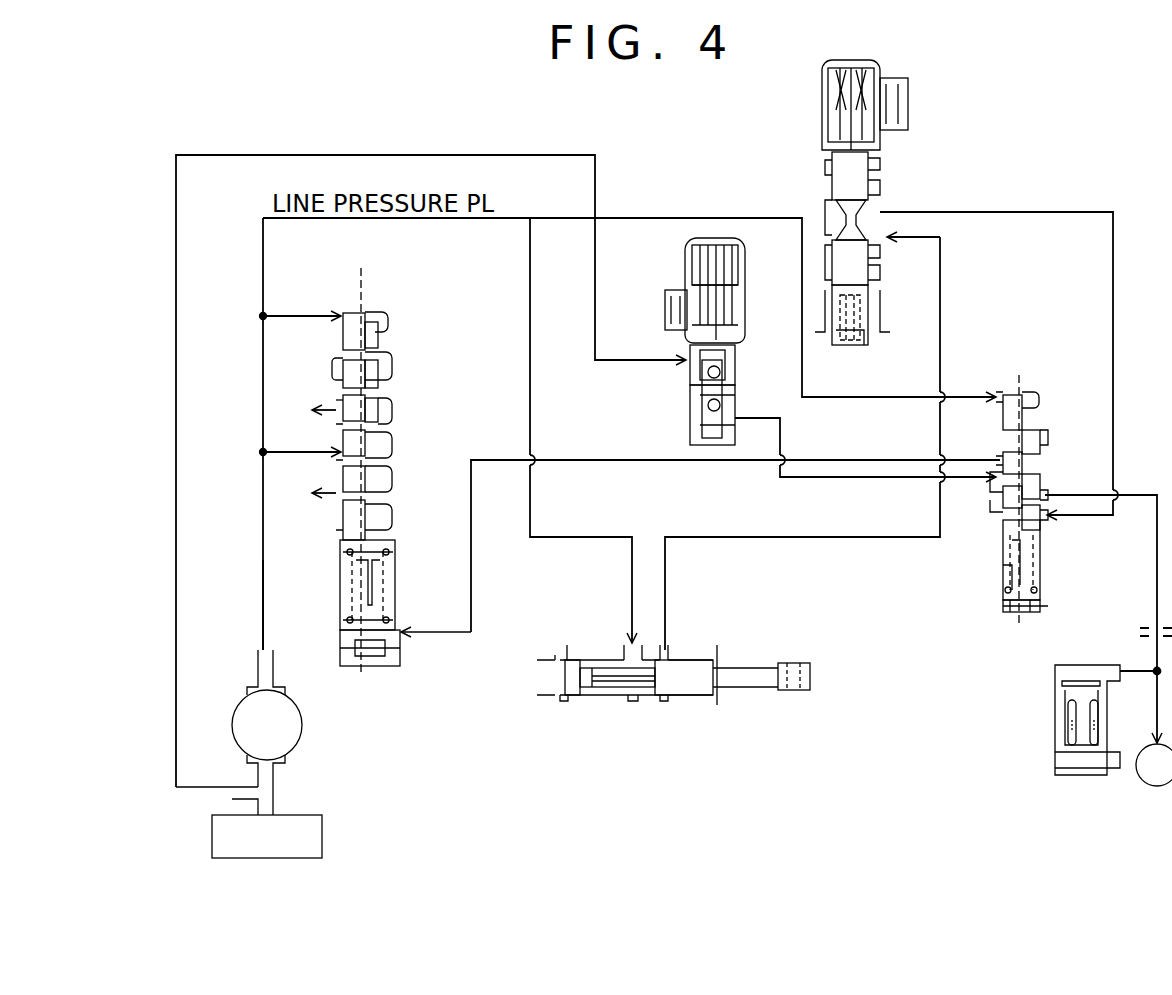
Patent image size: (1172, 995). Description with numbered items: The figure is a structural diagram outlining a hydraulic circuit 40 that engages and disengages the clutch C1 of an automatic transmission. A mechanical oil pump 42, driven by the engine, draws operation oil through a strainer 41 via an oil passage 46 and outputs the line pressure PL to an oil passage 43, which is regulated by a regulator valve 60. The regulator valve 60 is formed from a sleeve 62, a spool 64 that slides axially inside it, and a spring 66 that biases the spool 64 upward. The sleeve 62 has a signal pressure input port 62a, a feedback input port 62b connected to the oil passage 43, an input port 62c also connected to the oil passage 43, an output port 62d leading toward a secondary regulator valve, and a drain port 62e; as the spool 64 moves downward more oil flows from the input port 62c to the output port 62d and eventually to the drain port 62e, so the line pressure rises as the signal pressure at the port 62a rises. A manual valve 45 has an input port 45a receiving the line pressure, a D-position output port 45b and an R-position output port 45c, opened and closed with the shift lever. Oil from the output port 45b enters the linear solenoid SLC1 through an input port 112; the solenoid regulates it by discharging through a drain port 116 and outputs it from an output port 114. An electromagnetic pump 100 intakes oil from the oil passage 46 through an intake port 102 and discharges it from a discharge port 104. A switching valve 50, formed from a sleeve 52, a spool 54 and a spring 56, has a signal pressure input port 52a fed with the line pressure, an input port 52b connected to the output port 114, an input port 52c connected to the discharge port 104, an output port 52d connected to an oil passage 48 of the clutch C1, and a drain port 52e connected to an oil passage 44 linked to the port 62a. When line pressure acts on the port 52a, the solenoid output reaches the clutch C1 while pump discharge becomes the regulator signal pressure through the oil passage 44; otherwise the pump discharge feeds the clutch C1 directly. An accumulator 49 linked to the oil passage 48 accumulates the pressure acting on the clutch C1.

The hydraulic circuit 40 is at (1101, 146).
The strainer 41 is at (314, 814).
The mechanical oil pump 42 is at (302, 718).
The oil passage 43 is at (262, 386).
The oil passage 44 is at (655, 460).
The manual valve 45 is at (760, 628).
The input port 45a is at (630, 650).
The D-position output port 45b is at (672, 652).
The R-position output port 45c is at (560, 652).
The oil passage 46 is at (274, 796).
The oil passage 48 is at (1155, 618).
The accumulator 49 is at (1080, 666).
The switching valve 50 is at (1047, 440).
The sleeve 52 is at (1036, 396).
The signal pressure input port 52a is at (1010, 393).
The input port 52b is at (1040, 520).
The input port 52c is at (1000, 484).
The output port 52d is at (1042, 496).
The drain port 52e is at (1001, 455).
The spool 54 is at (1010, 440).
The spring 56 is at (1040, 582).
The regulator valve 60 is at (333, 274).
The sleeve 62 is at (384, 311).
The signal pressure input port 62a is at (402, 632).
The feedback input port 62b is at (338, 309).
The input port 62c is at (341, 446).
The output port 62d is at (341, 484).
The drain port 62e is at (341, 394).
The spool 64 is at (384, 394).
The spring 66 is at (388, 600).
The electromagnetic pump 100 is at (688, 280).
The intake port 102 is at (690, 362).
The discharge port 104 is at (735, 416).
The input port 112 is at (870, 240).
The output port 114 is at (870, 216).
The drain port 116 is at (880, 186).
The linear solenoid SLC1 is at (822, 100).
The clutch C1 is at (1154, 765).